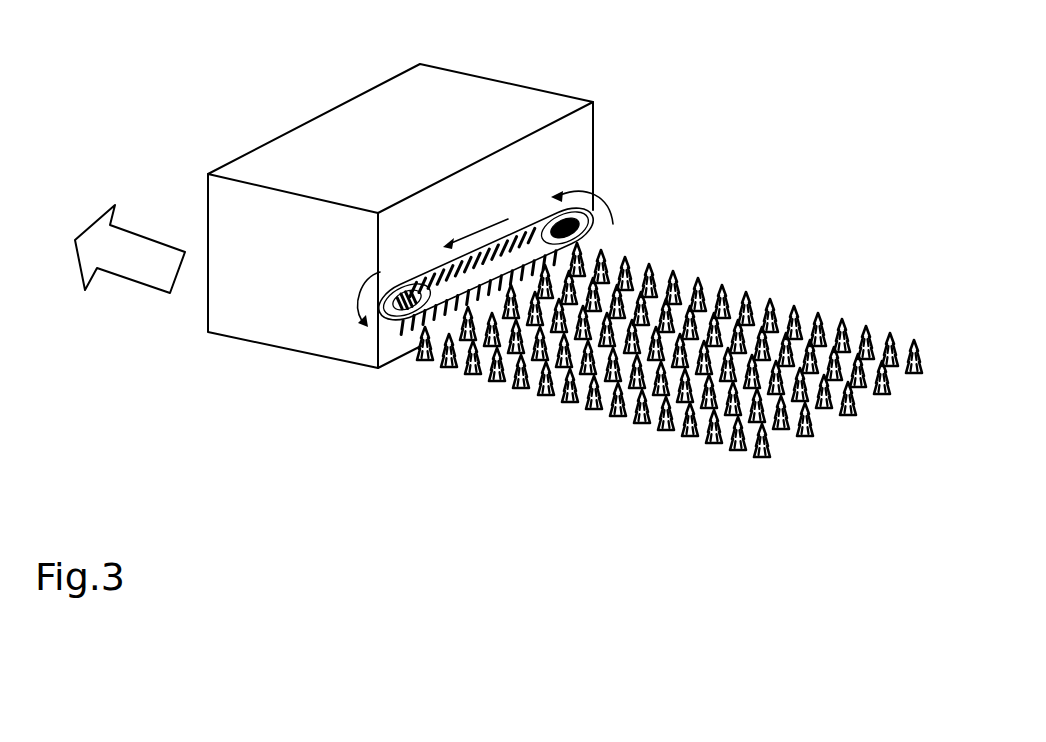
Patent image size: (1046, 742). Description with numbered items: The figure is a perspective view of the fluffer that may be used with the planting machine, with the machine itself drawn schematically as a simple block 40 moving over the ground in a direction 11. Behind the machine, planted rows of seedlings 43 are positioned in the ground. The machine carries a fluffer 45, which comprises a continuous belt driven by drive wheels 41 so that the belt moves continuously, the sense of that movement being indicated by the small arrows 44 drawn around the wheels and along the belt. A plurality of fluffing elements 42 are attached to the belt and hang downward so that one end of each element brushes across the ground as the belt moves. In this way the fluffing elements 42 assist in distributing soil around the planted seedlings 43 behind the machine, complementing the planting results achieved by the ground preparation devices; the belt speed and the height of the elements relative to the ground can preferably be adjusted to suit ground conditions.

The direction 11 is at (158, 274).
The block 40 is at (416, 164).
The drive wheels 41 is at (597, 240).
The fluffing elements 42 is at (464, 337).
The planted rows of seedlings 43 is at (746, 459).
The rotation direction of rollers 44 is at (608, 180).
The fluffer 45 is at (537, 225).